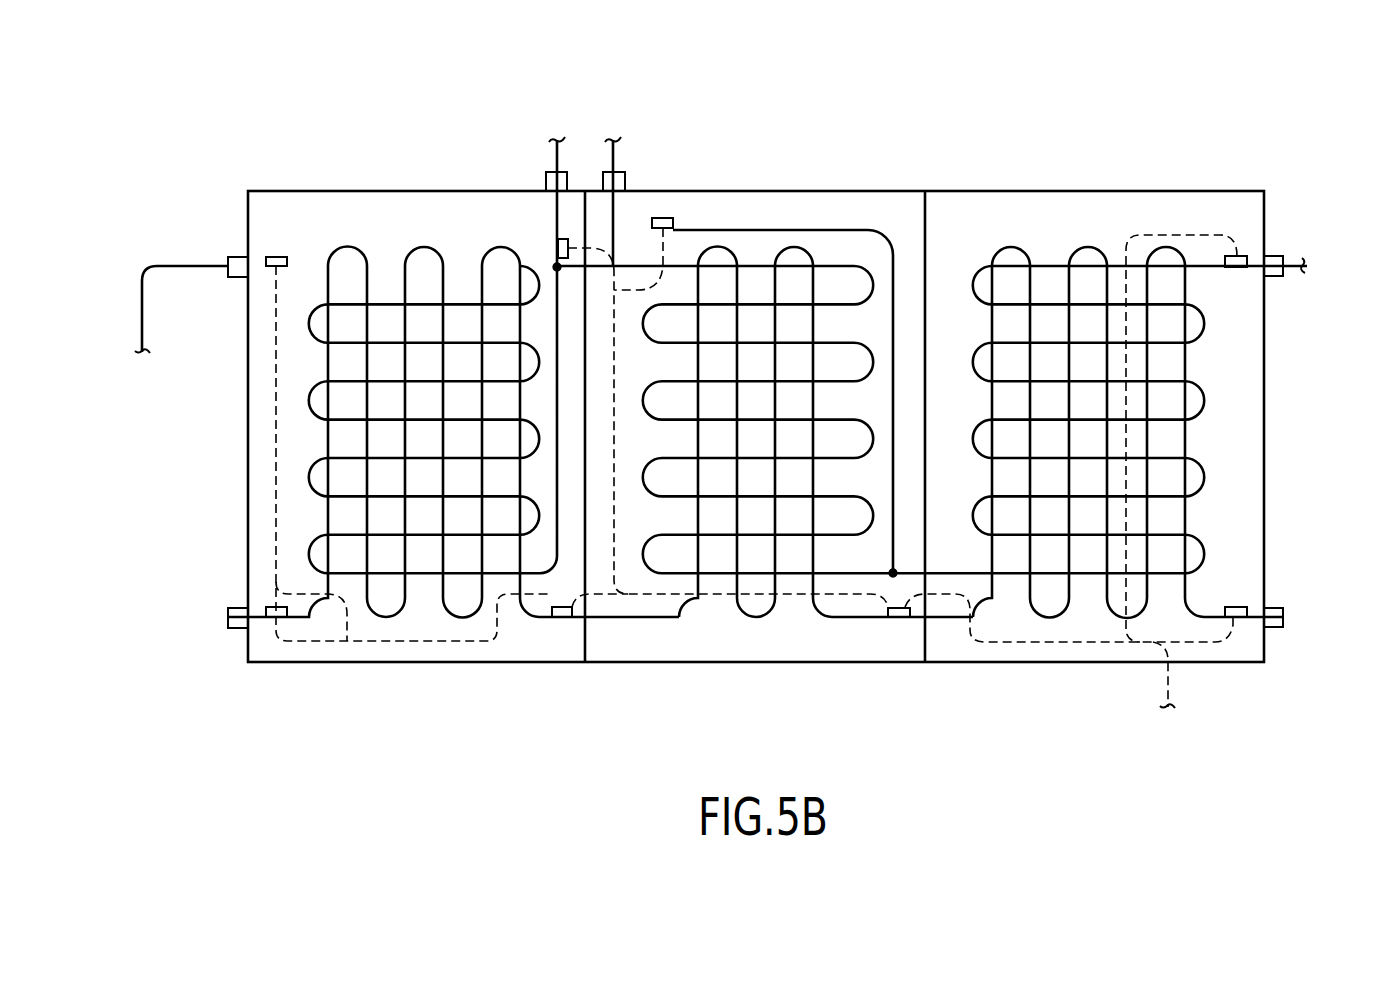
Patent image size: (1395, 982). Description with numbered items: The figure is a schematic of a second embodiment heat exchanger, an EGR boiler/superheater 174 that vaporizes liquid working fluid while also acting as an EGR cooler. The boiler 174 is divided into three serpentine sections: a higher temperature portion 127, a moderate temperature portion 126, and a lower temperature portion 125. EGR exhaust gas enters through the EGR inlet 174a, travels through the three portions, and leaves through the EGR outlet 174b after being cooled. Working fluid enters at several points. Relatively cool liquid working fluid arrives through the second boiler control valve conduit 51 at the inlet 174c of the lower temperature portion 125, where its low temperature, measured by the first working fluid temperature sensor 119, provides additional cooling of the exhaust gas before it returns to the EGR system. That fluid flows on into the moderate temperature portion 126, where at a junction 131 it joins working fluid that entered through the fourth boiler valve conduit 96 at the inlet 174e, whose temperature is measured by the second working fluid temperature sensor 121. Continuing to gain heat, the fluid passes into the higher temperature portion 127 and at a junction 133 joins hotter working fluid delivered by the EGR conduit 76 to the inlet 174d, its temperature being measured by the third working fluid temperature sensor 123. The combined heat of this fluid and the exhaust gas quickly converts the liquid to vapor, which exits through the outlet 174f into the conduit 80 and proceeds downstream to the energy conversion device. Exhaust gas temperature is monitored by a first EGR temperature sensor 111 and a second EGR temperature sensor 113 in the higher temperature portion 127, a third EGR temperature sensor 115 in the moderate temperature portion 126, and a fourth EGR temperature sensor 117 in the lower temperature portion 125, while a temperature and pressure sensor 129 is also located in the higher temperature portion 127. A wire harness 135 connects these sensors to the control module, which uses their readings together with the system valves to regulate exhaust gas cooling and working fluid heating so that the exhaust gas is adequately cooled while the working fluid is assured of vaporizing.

The EGR boiler/superheater 174 is at (1297, 130).
The higher temperature portion 127 is at (390, 202).
The moderate temperature portion 126 is at (734, 652).
The lower temperature portion 125 is at (993, 198).
The conduit 80 is at (142, 318).
The EGR conduit 76 is at (553, 155).
The fourth boiler valve conduit 96 is at (618, 154).
The second boiler control valve conduit 51 is at (1300, 264).
The EGR inlet 174a is at (238, 628).
The EGR outlet 174b is at (1273, 628).
The inlet 174c is at (1275, 278).
The inlet 174d is at (543, 181).
The inlet 174e is at (627, 180).
The outlet 174f is at (236, 258).
The temperature and pressure sensor 129 is at (278, 257).
The junction 133 is at (557, 266).
The third working fluid temperature sensor 123 is at (568, 247).
The second working fluid temperature sensor 121 is at (673, 218).
The first working fluid temperature sensor 119 is at (1232, 268).
The first EGR temperature sensor 111 is at (276, 607).
The second EGR temperature sensor 113 is at (552, 617).
The third EGR temperature sensor 115 is at (888, 615).
The fourth EGR temperature sensor 117 is at (1237, 607).
The junction 131 is at (893, 573).
The wire harness 135 is at (1168, 690).